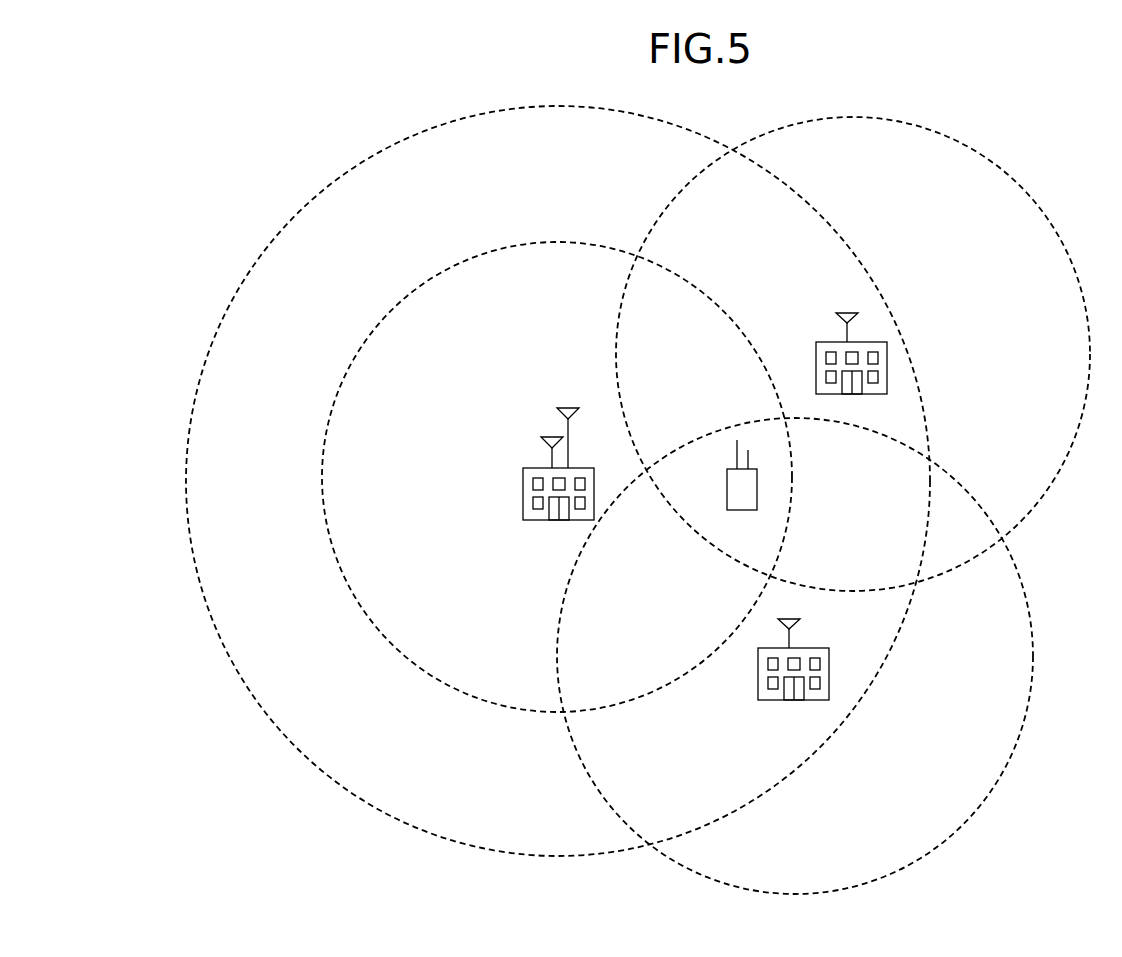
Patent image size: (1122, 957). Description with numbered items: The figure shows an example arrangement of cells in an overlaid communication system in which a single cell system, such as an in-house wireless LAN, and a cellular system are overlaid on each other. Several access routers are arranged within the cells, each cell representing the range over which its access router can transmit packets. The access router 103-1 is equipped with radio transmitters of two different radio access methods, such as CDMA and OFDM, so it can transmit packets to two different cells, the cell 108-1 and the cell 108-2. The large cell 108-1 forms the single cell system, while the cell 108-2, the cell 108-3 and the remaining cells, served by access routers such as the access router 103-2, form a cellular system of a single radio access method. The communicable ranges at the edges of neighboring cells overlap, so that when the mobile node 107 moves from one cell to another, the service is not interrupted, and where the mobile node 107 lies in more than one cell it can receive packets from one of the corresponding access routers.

The cell 108-1 is at (558, 479).
The cell 108-2 is at (548, 476).
The cell 108-3 is at (862, 354).
The access router 103-1 is at (497, 455).
The access router 103-2 is at (924, 353).
The mobile node 107 is at (757, 484).